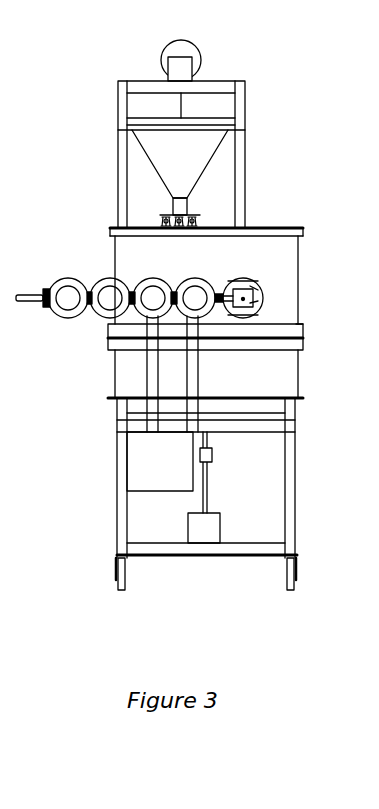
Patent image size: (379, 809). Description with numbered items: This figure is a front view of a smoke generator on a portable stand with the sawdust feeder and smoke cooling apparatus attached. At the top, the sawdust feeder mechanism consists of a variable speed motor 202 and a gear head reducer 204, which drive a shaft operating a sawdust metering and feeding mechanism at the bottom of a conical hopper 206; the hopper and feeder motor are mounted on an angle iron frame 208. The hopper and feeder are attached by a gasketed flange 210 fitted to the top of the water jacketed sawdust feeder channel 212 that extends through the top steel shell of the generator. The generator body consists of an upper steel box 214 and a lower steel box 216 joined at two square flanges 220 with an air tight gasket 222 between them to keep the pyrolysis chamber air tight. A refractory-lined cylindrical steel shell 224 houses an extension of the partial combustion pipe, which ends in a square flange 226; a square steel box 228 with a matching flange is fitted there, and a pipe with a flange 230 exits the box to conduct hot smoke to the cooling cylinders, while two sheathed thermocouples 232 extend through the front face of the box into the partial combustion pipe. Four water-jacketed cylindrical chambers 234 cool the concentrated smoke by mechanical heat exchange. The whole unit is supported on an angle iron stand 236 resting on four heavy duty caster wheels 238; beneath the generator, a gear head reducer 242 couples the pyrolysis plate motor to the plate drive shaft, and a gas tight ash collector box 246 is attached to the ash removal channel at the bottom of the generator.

The variable speed motor 202 is at (192, 50).
The gear head reducer 204 is at (175, 62).
The conical hopper 206 is at (210, 143).
The angle iron frame 208 is at (119, 143).
The gasketed flange 210 is at (197, 217).
The water jacketed sawdust feeder channel 212 is at (163, 220).
The upper steel box 214 is at (287, 253).
The lower steel box 216 is at (283, 367).
The square flanges 220 is at (302, 338).
The air tight gasket 222 is at (109, 343).
The cylindrical steel shell 224 is at (256, 296).
The square flange 226 is at (258, 301).
The square steel box 228 is at (258, 290).
The pipe with a flange 230 is at (221, 291).
The sheathed thermocouples 232 is at (302, 326).
The cylindrical chambers 234 is at (187, 281).
The angle iron stand 236 is at (293, 453).
The caster wheels 238 is at (295, 585).
The gear head reducer 242 is at (218, 517).
The ash collector box 246 is at (142, 468).